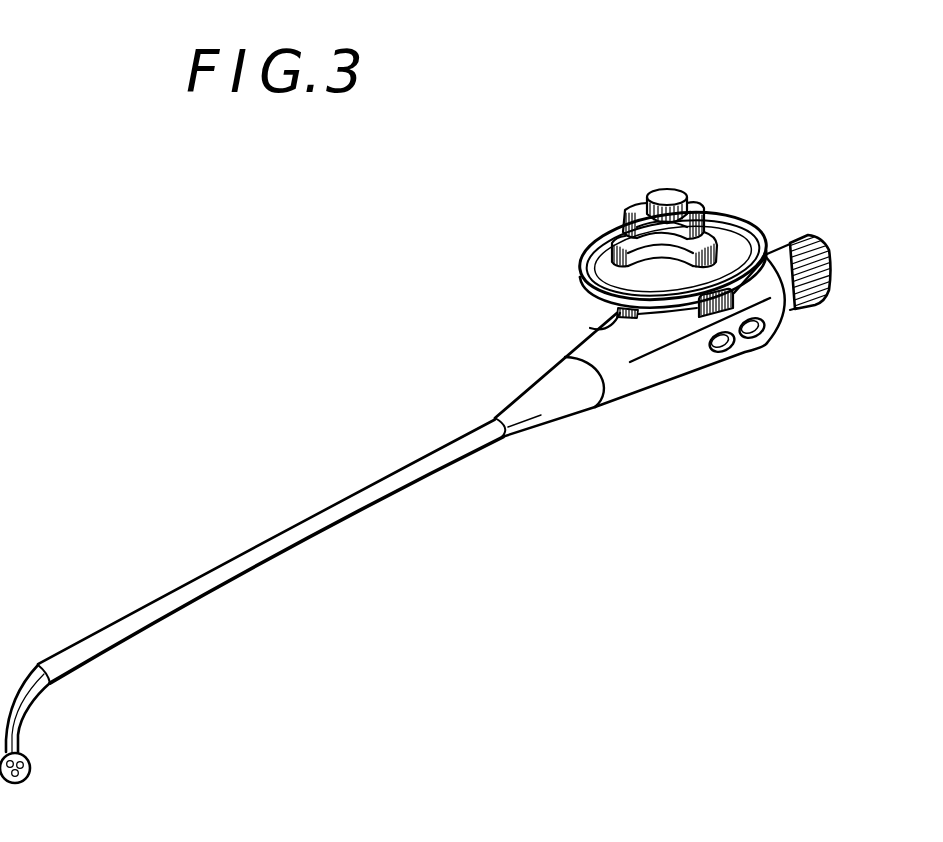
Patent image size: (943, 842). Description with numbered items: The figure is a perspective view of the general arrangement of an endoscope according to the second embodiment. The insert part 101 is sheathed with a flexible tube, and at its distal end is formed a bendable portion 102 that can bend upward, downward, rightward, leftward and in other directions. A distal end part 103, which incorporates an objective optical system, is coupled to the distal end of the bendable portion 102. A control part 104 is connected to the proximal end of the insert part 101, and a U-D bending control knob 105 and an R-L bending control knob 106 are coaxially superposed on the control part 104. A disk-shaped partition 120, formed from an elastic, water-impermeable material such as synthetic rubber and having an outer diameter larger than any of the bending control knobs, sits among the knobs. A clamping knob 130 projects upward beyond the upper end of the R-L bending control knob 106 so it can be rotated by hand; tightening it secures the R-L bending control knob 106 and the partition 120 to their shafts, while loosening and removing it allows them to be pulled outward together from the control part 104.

The insert part 101 is at (297, 522).
The bendable portion 102 is at (22, 675).
The distal end part 103 is at (8, 750).
The control part 104 is at (670, 373).
The U-D bending control knob 105 is at (590, 328).
The R-L bending control knob 106 is at (633, 225).
The disk-shaped partition 120 is at (607, 278).
The clamping knob 130 is at (668, 192).